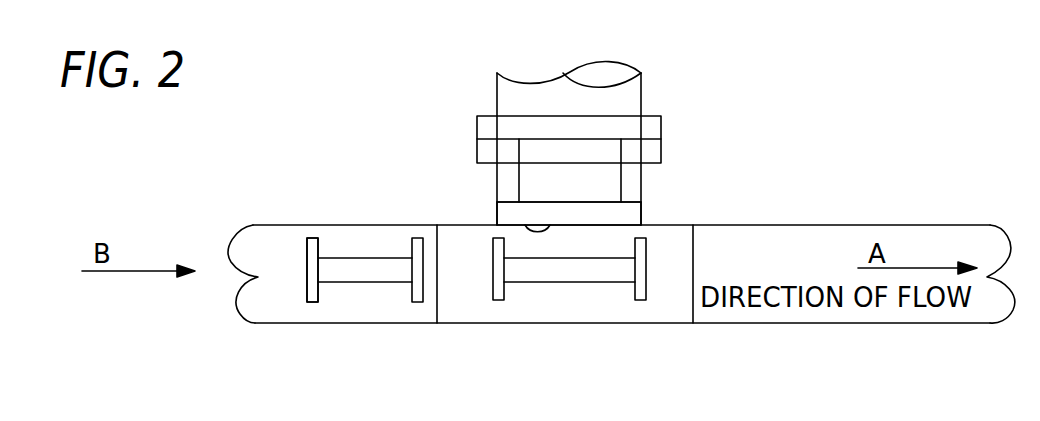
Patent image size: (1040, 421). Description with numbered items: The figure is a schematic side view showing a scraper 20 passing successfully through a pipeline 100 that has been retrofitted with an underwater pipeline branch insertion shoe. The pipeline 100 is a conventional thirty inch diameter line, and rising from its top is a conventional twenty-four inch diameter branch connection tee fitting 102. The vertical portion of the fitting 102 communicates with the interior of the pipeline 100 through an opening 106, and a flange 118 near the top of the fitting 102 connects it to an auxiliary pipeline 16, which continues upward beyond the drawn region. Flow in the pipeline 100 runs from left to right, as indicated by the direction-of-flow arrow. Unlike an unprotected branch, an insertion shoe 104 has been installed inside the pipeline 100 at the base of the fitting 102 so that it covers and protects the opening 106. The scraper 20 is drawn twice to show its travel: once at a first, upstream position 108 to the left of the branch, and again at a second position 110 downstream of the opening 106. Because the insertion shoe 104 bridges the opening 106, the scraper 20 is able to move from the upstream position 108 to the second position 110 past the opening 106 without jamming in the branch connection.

The auxiliary pipeline 16 is at (641, 92).
The scraper 20 is at (307, 288).
The pipeline 100 is at (278, 225).
The branch connection tee fitting 102 is at (641, 183).
The insertion shoe 104 is at (632, 215).
The opening 106 is at (545, 232).
The first upstream position 108 is at (357, 318).
The second position 110 is at (557, 316).
The flange 118 is at (458, 137).